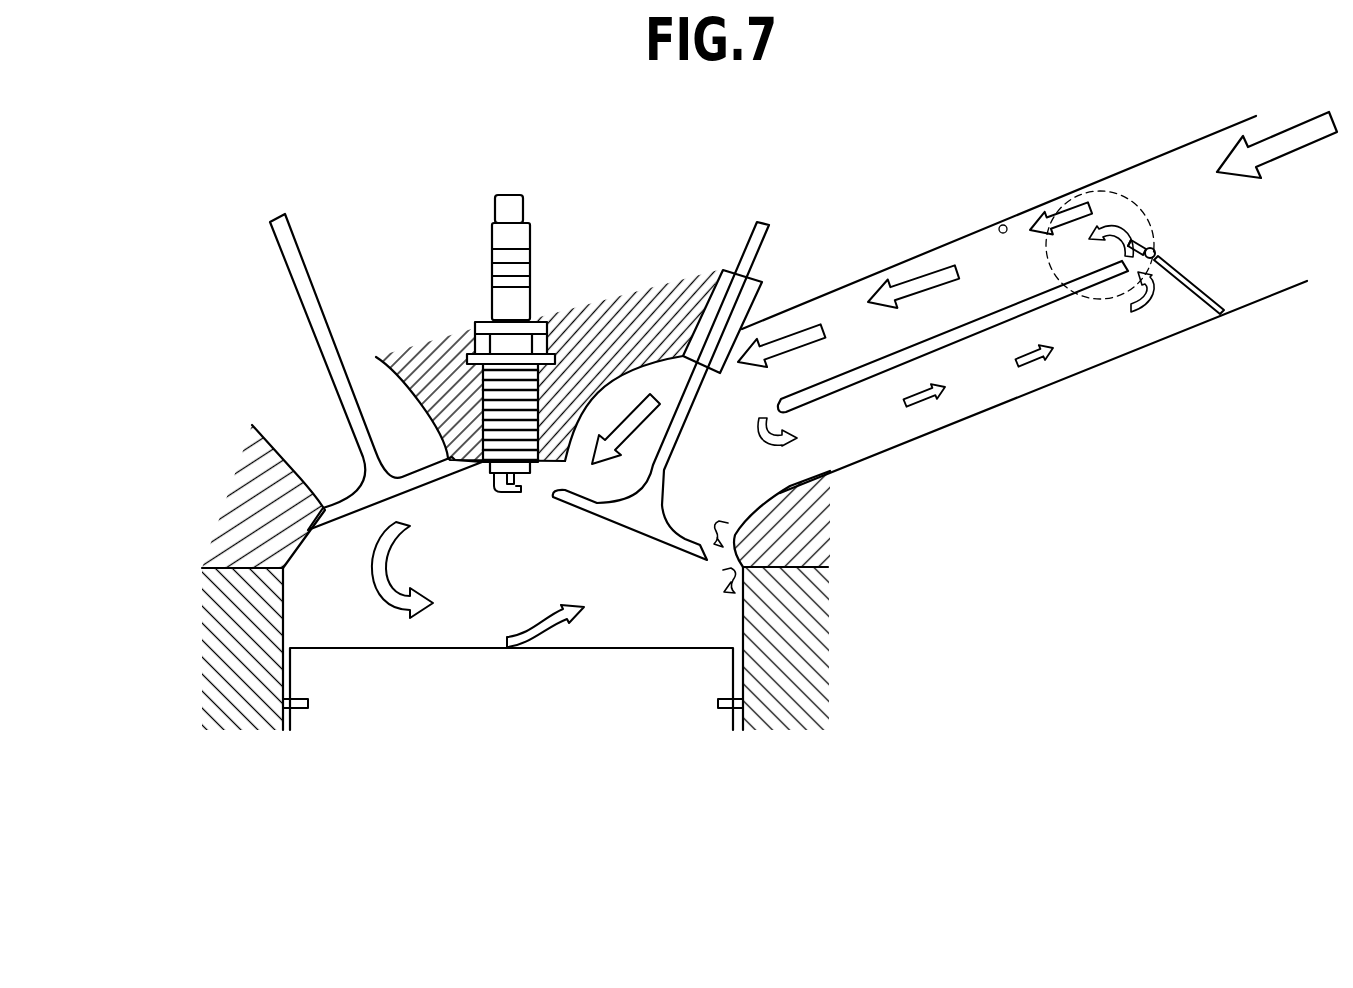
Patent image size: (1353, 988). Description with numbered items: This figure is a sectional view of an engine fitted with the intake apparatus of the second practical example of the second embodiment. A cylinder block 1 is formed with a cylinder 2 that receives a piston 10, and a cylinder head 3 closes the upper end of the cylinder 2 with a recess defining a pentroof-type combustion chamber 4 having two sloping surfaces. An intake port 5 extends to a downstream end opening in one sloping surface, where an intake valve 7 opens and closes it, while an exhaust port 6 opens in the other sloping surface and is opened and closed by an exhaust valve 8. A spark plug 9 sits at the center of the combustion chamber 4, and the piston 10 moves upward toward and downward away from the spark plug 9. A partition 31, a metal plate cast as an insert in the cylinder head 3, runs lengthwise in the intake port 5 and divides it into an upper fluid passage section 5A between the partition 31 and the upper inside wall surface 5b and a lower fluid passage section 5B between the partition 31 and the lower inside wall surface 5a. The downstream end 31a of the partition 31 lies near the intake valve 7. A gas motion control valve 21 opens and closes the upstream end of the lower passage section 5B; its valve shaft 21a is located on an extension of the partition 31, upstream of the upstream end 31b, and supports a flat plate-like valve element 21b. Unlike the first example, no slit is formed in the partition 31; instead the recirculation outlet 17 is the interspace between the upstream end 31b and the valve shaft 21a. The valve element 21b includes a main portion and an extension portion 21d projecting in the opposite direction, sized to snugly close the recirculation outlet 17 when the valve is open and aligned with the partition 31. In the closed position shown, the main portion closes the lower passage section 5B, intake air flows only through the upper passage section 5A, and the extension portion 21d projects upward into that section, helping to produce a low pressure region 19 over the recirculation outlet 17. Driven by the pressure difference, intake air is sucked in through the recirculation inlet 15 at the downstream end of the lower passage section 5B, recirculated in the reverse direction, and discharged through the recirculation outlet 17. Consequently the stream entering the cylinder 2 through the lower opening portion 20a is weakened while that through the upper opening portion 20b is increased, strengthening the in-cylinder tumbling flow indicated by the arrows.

The cylinder block 1 is at (243, 658).
The cylinder 2 is at (285, 601).
The cylinder head 3 is at (255, 507).
The combustion chamber 4 is at (453, 563).
The intake port 5 is at (1037, 309).
The upper fluid passage section 5A is at (852, 323).
The lower fluid passage section 5B is at (933, 418).
The lower inside wall surface 5a is at (1024, 386).
The upper inside wall surface 5b is at (1000, 226).
The exhaust port 6 is at (390, 395).
The intake valve 7 is at (640, 528).
The exhaust valve 8 is at (327, 342).
The spark plug 9 is at (507, 487).
The piston 10 is at (720, 673).
The recirculation inlet 15 is at (790, 454).
The recirculation outlet 17 is at (1177, 300).
The low pressure region 19 is at (1046, 272).
The lower opening portion 20a is at (730, 550).
The upper opening portion 20b is at (563, 467).
The gas motion control valve 21 is at (1207, 233).
The valve shaft 21a is at (1163, 247).
The valve element 21b is at (1220, 293).
The extension portion 21d is at (1133, 243).
The partition 31 is at (960, 343).
The downstream end of partition 31a is at (773, 413).
The upstream end of partition 31b is at (1115, 298).